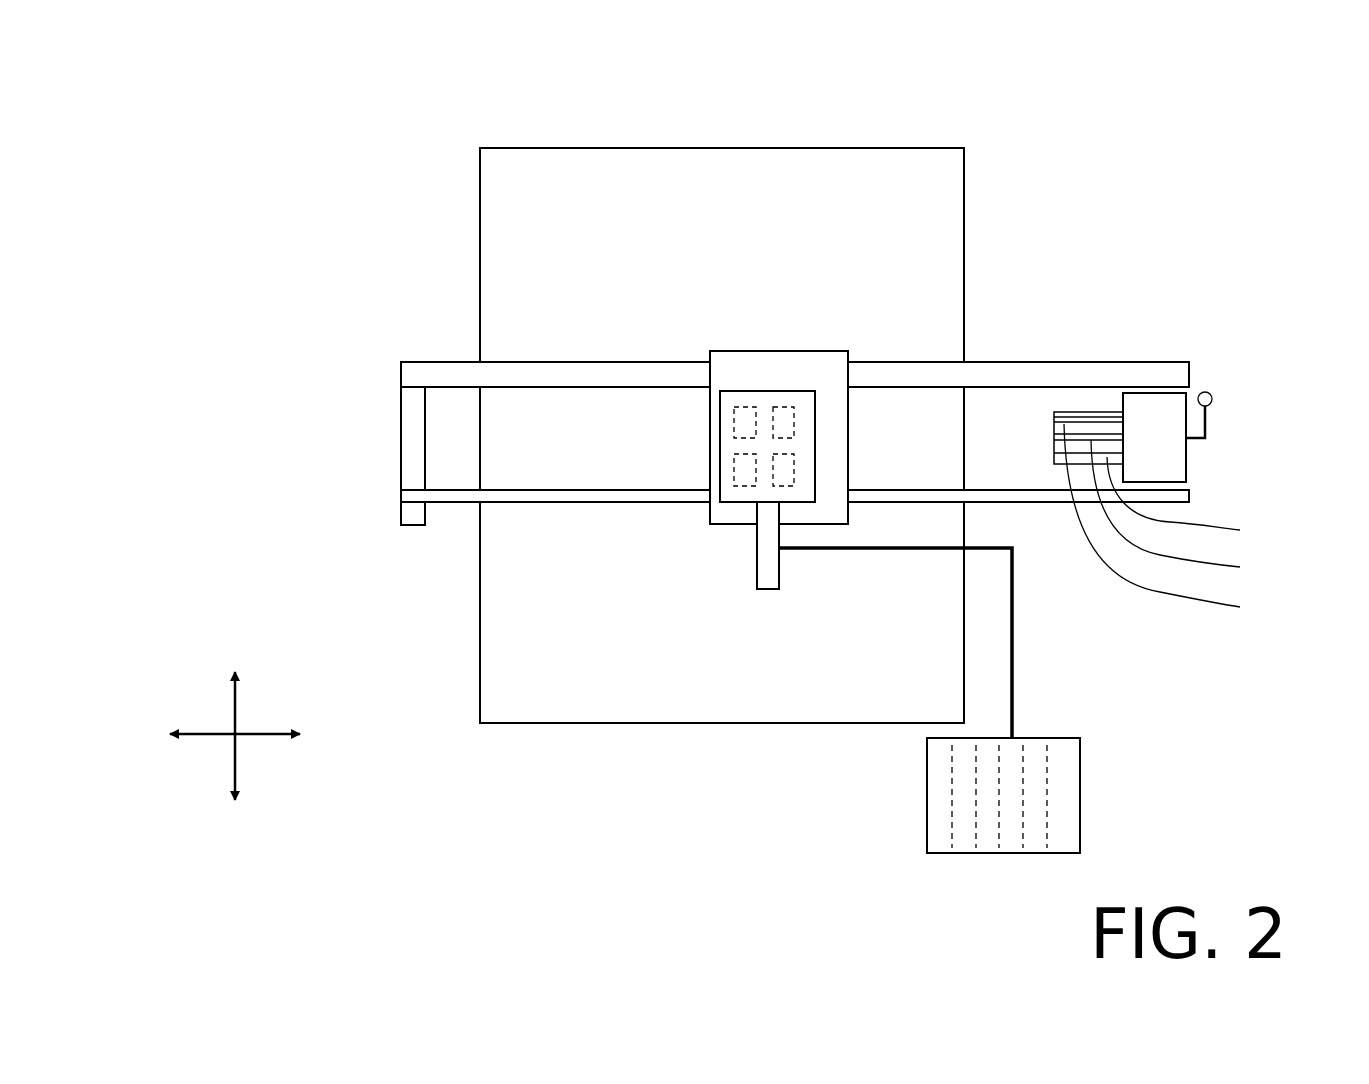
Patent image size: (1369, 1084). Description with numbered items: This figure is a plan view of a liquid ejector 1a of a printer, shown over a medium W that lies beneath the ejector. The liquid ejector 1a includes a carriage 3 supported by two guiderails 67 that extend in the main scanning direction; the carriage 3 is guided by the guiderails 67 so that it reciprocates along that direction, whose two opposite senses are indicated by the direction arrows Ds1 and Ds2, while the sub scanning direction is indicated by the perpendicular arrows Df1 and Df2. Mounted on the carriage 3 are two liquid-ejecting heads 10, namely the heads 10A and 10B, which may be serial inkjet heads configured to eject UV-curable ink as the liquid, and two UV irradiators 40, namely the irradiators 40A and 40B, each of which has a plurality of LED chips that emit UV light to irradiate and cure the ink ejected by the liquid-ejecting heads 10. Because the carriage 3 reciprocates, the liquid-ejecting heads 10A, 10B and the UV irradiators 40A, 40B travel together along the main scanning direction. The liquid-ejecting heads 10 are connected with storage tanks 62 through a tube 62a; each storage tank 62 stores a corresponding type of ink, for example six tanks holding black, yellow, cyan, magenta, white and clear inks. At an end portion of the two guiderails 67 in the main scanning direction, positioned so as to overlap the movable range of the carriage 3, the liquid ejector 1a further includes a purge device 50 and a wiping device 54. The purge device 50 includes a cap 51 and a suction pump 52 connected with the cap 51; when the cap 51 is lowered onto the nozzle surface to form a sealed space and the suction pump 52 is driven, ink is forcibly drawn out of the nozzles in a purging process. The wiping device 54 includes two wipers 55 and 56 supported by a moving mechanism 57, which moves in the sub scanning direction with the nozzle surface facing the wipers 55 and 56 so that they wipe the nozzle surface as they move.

The liquid ejector 1a is at (748, 140).
The medium W is at (928, 198).
The guiderail 67 is at (413, 375).
The carriage 3 is at (718, 373).
The UV irradiator 40 is at (698, 445).
The UV irradiator 40A is at (744, 405).
The UV irradiator 40B is at (745, 490).
The liquid-ejecting head 10 is at (854, 376).
The liquid-ejecting head 10A is at (785, 407).
The liquid-ejecting head 10B is at (798, 470).
The purge device 50 is at (1221, 431).
The cap 51 is at (1172, 459).
The suction pump 52 is at (1225, 413).
The wiping device 54 is at (1187, 521).
The wiper 55 is at (1272, 512).
The wiper 56 is at (1180, 511).
The moving mechanism 57 is at (1188, 501).
The storage tank 62 is at (1064, 785).
The tube 62a is at (1013, 657).
The first scanning direction Ds1 is at (203, 733).
The second scanning direction Ds2 is at (265, 733).
The first transport direction Df1 is at (233, 760).
The second transport direction Df2 is at (235, 702).